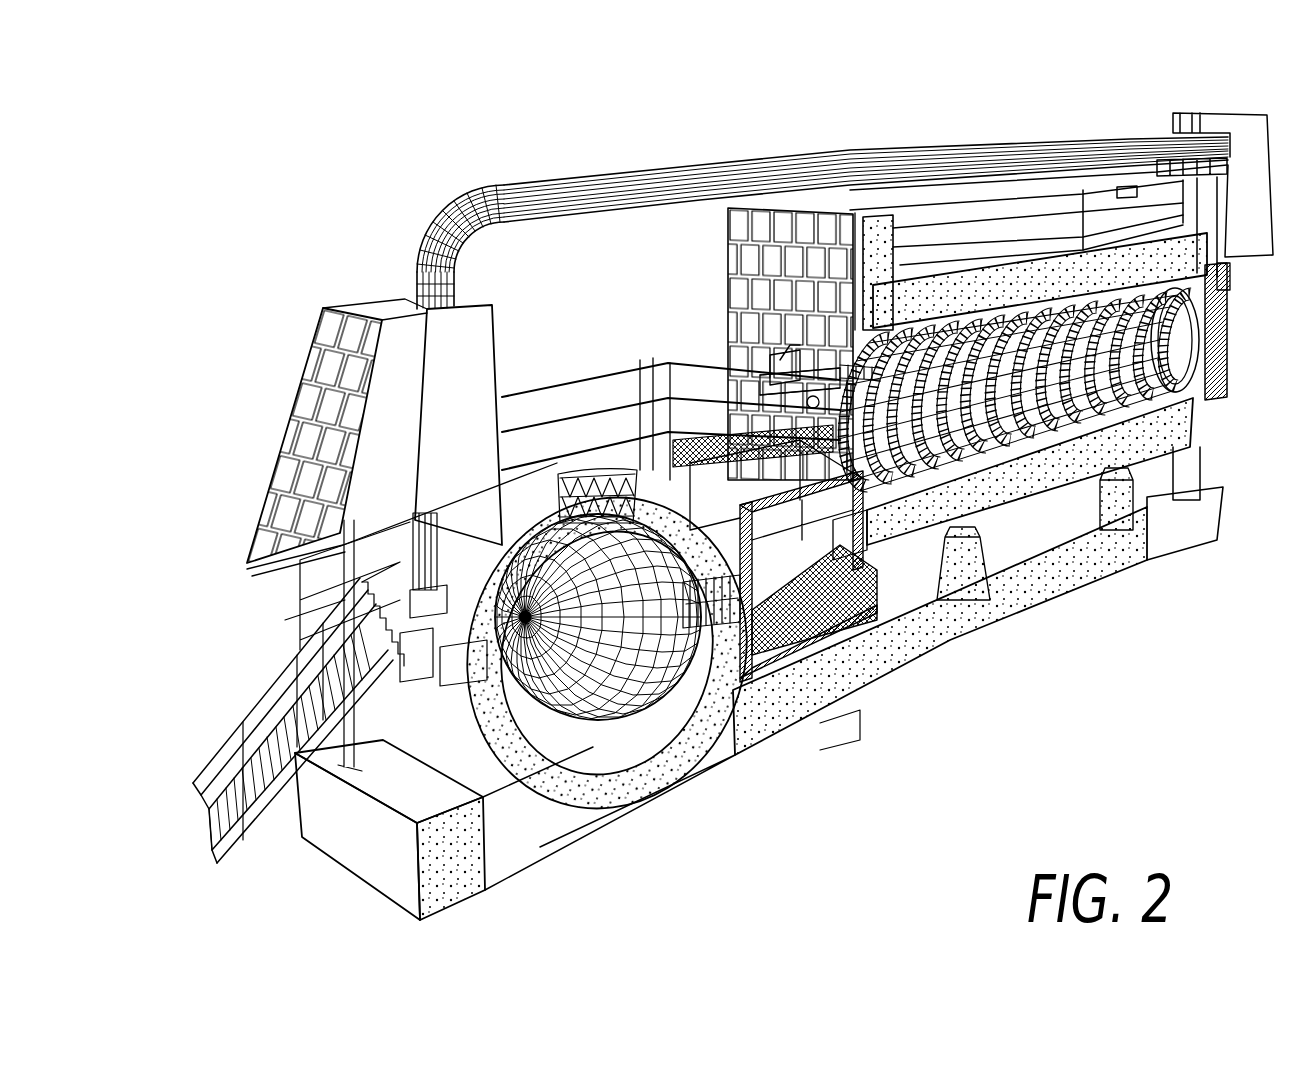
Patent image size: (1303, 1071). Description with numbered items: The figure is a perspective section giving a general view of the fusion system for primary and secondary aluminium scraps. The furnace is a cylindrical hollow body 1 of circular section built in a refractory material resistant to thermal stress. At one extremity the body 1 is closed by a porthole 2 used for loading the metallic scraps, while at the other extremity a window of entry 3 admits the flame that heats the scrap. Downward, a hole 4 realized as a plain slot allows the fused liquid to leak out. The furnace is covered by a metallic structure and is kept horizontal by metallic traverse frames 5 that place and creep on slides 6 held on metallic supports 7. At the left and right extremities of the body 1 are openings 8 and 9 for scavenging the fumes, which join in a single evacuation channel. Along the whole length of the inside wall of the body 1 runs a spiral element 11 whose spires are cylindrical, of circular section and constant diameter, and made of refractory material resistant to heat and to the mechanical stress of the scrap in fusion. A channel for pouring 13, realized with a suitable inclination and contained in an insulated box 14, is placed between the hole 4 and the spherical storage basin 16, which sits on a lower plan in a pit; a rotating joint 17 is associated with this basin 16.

The cylindrical hollow body 1 is at (1033, 487).
The porthole 2 is at (1237, 360).
The window of entry 3 is at (840, 367).
The hole 4 is at (843, 540).
The metallic traverse frames 5 is at (983, 247).
The slides 6 is at (960, 523).
The metallic supports 7 is at (960, 573).
The opening 8 is at (878, 222).
The opening 9 is at (1197, 193).
The spiral element 11 is at (1187, 407).
The channel for pouring 13 is at (788, 567).
The box 14 is at (847, 627).
The spherical storage basin 16 is at (597, 773).
The rotating joint 17 is at (742, 684).